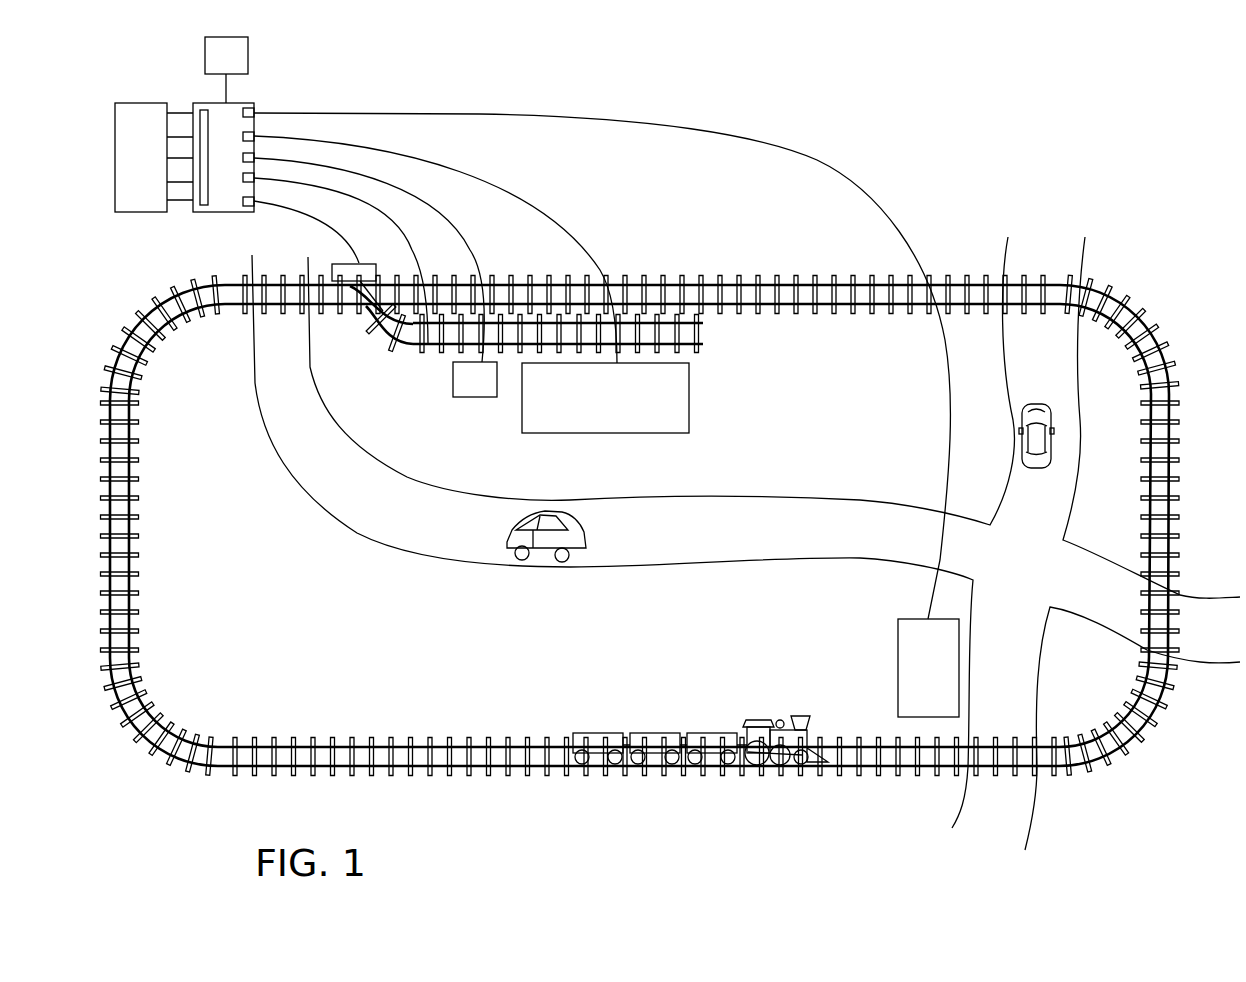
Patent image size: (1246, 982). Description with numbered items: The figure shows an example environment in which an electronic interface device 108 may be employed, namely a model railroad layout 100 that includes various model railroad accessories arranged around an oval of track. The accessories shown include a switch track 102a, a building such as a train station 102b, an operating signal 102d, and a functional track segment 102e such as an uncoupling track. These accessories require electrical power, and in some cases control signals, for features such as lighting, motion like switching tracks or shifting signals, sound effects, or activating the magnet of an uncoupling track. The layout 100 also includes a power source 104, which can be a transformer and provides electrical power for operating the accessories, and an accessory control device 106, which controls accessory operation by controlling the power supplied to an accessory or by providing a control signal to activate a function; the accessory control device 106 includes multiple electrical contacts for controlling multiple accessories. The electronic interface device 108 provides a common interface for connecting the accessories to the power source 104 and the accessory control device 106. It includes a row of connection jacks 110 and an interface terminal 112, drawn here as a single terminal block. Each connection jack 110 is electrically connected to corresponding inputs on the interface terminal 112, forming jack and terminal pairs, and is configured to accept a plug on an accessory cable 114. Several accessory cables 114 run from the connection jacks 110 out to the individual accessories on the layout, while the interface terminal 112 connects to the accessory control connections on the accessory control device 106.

The model railroad layout 100 is at (995, 63).
The switch track 102a is at (336, 264).
The train station 102b is at (689, 403).
The operating signal 102d is at (470, 398).
The functional track segment 102e is at (413, 346).
The power source 104 is at (249, 47).
The accessory control device 106 is at (113, 102).
The electronic interface device 108 is at (203, 102).
The connection jacks 110 is at (247, 206).
The interface terminal 112 is at (203, 206).
The accessory cable 114 is at (317, 213).